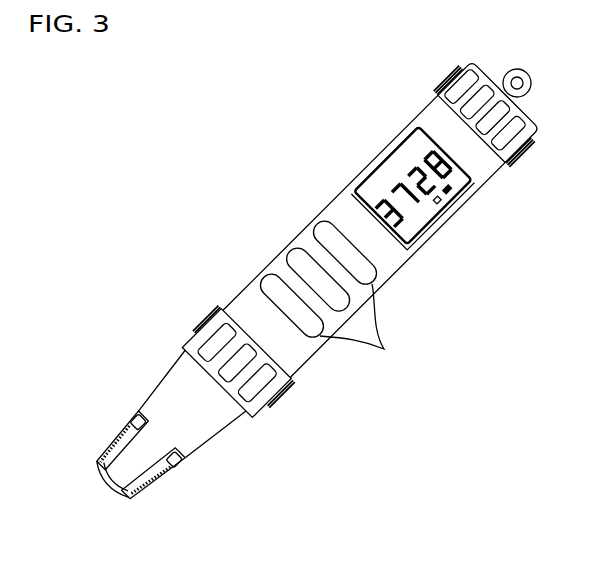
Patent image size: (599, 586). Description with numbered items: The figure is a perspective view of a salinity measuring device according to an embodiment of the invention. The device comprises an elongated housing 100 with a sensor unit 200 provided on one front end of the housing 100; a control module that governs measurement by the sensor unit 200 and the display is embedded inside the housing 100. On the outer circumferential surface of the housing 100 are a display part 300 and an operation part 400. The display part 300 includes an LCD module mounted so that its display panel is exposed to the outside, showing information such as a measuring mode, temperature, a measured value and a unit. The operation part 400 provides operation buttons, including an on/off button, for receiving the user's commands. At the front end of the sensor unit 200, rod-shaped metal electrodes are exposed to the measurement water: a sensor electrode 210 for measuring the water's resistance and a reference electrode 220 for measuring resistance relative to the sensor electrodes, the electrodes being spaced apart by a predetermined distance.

The housing 100 is at (347, 200).
The sensor unit 200 is at (173, 400).
The sensor electrode 210 is at (122, 435).
The reference electrode 220 is at (158, 488).
The display part 300 is at (423, 210).
The operation part 400 is at (326, 299).